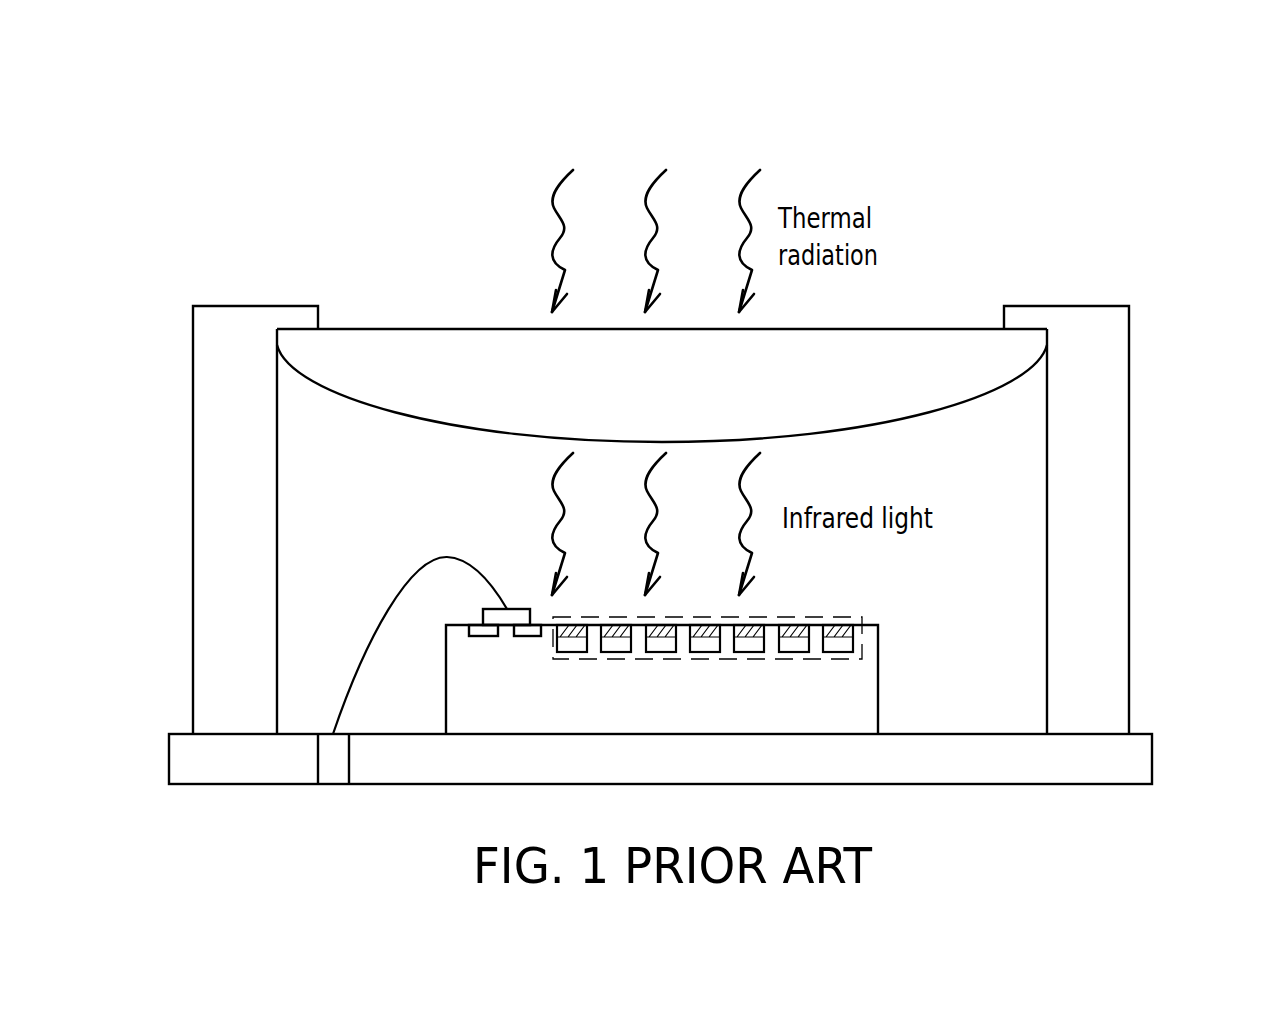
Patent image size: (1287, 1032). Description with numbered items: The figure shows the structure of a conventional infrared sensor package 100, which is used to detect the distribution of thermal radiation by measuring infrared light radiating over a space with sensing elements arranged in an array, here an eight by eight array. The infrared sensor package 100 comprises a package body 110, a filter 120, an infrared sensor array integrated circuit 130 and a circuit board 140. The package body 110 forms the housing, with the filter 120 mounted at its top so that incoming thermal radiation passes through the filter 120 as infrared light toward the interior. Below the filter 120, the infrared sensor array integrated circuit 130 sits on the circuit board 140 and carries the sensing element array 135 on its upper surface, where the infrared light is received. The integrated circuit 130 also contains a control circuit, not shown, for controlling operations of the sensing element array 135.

The infrared sensor package 100 is at (1080, 116).
The package body 110 is at (1106, 527).
The filter 120 is at (855, 422).
The infrared sensor array integrated circuit 130 is at (678, 720).
The sensing element array 135 is at (842, 617).
The circuit board 140 is at (1128, 761).